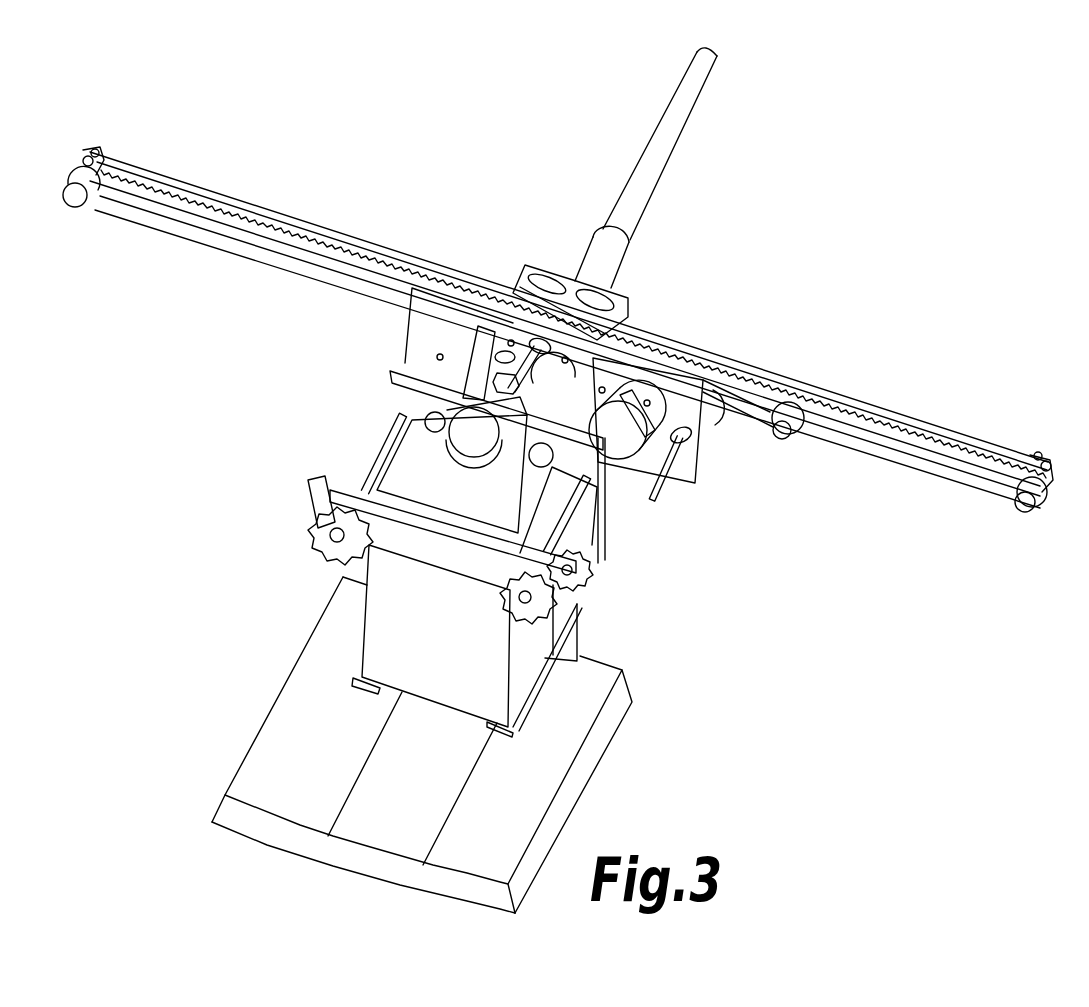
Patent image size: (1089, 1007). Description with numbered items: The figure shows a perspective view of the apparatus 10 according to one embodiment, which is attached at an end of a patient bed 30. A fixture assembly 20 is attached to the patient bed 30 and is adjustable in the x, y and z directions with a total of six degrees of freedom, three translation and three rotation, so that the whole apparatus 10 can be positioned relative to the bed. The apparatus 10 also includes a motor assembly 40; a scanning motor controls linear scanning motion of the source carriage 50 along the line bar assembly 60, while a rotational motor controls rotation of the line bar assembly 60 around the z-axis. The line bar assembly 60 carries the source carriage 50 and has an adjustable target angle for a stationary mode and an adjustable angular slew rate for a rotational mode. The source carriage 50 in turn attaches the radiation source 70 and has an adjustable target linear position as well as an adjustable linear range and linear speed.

The apparatus 10 is at (940, 197).
The fixture assembly 20 is at (400, 458).
The patient bed 30 is at (272, 840).
The motor assembly 40 is at (628, 463).
The source carriage 50 is at (625, 308).
The line bar assembly 60 is at (987, 443).
The radiation source 70 is at (674, 137).